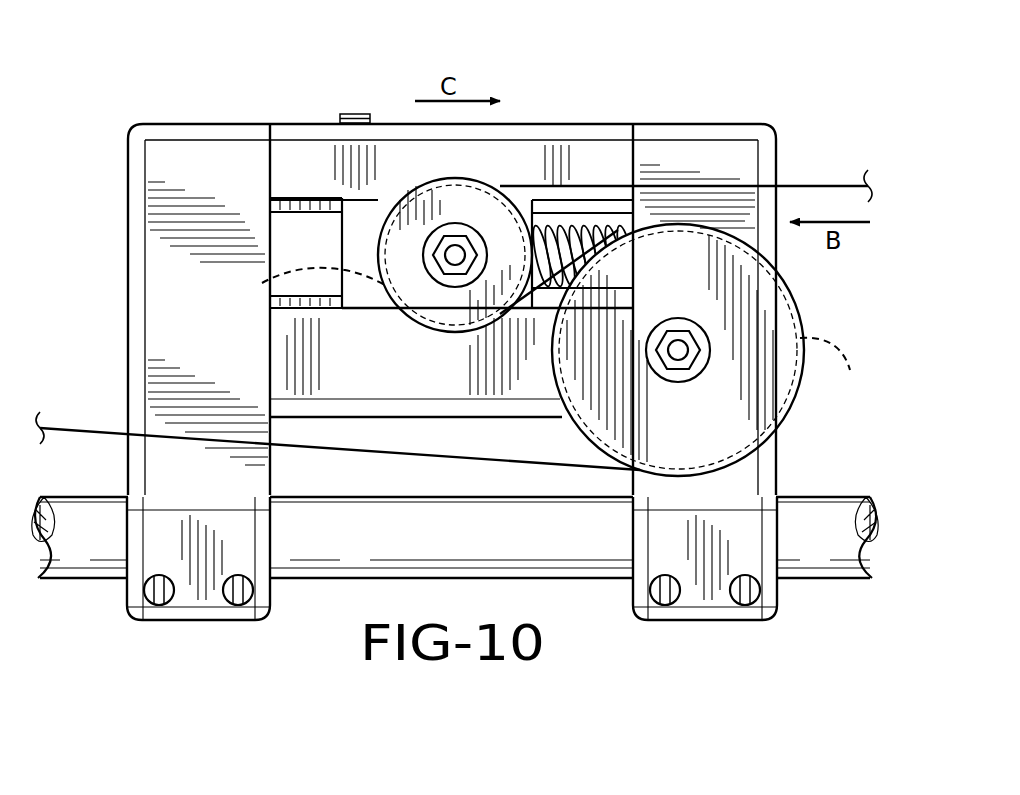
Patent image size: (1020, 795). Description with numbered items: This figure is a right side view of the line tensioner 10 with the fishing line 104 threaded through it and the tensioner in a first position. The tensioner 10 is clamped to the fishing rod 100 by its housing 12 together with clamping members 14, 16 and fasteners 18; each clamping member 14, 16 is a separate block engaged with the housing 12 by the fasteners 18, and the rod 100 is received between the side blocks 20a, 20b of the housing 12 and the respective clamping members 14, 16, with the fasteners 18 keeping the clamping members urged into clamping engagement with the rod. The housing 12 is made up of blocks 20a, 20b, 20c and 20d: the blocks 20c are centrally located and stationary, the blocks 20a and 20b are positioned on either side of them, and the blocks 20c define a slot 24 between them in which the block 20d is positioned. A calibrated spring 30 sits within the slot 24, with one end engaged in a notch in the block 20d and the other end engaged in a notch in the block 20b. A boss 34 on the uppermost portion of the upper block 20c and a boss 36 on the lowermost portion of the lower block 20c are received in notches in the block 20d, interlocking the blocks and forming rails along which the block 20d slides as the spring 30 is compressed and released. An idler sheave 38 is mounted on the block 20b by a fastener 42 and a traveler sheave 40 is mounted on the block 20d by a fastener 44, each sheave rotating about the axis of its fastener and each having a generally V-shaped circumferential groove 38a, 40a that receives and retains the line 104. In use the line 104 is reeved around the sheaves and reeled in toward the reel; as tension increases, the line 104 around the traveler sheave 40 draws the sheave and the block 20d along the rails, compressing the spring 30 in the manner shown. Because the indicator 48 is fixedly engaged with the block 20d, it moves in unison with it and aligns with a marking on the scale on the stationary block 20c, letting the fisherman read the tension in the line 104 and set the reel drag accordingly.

The line tensioner 10 is at (617, 58).
The housing 12 is at (305, 120).
The clamping member 14 is at (272, 537).
The clamping member 16 is at (635, 540).
The fasteners 18 is at (170, 600).
The block 20a is at (177, 337).
The block 20b is at (722, 125).
The block 20c is at (535, 122).
The block 20d is at (378, 311).
The slot 24 is at (288, 235).
The spring 30 is at (610, 223).
The boss 34 is at (302, 210).
The boss 36 is at (302, 300).
The idler sheave 38 is at (768, 300).
The circumferential groove 38a is at (838, 380).
The traveler sheave 40 is at (458, 200).
The circumferential groove 40a is at (285, 299).
The fastener 42 is at (678, 356).
The fastener 44 is at (453, 262).
The indicator 48 is at (345, 114).
The fishing rod 100 is at (48, 580).
The fishing line 104 is at (818, 185).